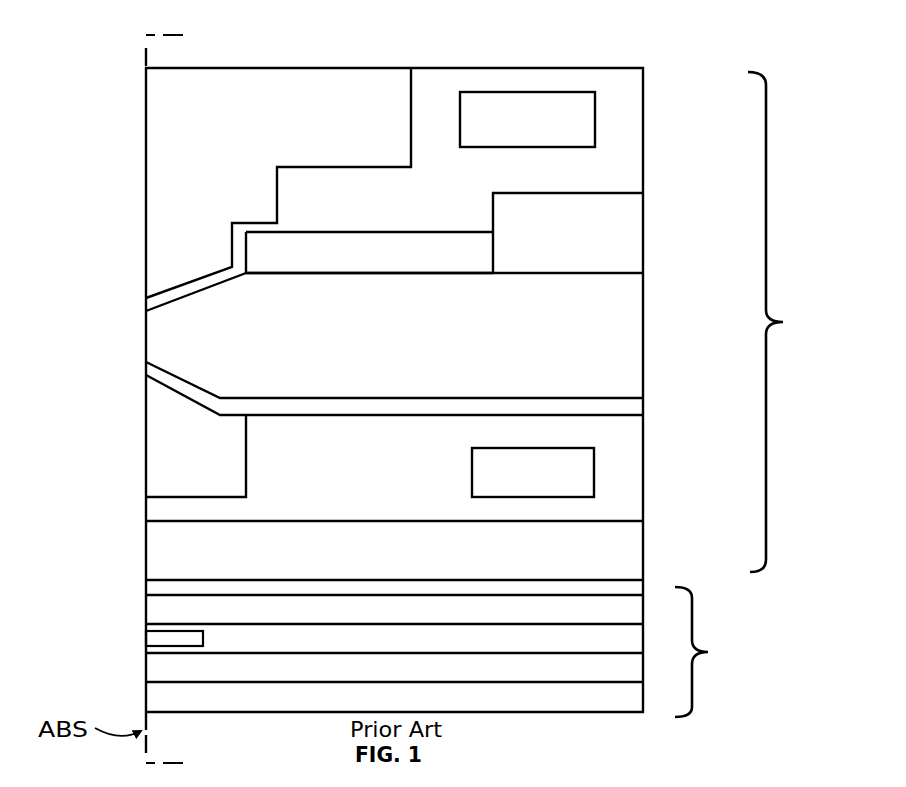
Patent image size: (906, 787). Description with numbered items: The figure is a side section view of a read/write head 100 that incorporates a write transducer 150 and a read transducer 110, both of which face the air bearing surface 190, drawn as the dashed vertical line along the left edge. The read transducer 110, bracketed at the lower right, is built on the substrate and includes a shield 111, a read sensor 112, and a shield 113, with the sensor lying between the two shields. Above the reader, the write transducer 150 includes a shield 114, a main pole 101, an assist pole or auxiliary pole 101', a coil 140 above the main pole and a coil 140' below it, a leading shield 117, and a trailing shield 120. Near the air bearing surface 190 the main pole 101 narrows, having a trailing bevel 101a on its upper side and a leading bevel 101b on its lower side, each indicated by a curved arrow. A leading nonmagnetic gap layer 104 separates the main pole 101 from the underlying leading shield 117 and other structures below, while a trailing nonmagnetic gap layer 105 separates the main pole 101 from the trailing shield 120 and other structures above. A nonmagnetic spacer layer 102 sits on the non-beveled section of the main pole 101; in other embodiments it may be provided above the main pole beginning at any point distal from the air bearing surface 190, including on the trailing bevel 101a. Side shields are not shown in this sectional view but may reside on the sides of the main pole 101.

The read/write head 100 is at (697, 41).
The ABS 190 is at (213, 398).
The trailing shield 120 is at (195, 150).
The trailing nonmagnetic gap layer 105 is at (145, 301).
The coil 140 is at (588, 119).
The nonmagnetic spacer layer 102 is at (397, 255).
The assist pole 101' is at (612, 233).
The main pole 101 is at (440, 335).
The trailing bevel 101a is at (178, 308).
The leading bevel 101b is at (172, 360).
The leading nonmagnetic gap layer 104 is at (145, 368).
The leading shield 117 is at (160, 422).
The coil 140' is at (605, 470).
The shield 114 is at (643, 552).
The write transducer 150 is at (787, 322).
The shield 113 is at (145, 608).
The read sensor 112 is at (145, 638).
The shield 111 is at (145, 672).
The read transducer 110 is at (545, 652).